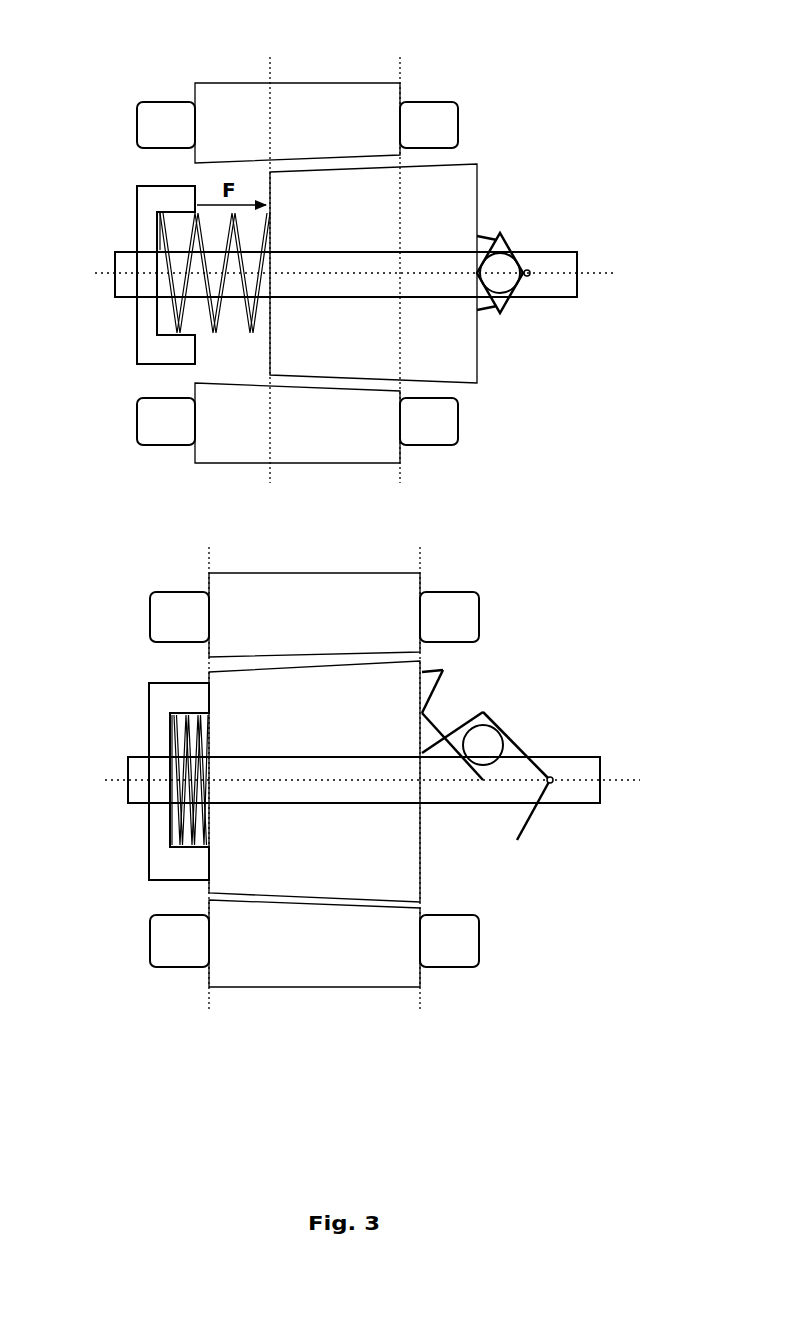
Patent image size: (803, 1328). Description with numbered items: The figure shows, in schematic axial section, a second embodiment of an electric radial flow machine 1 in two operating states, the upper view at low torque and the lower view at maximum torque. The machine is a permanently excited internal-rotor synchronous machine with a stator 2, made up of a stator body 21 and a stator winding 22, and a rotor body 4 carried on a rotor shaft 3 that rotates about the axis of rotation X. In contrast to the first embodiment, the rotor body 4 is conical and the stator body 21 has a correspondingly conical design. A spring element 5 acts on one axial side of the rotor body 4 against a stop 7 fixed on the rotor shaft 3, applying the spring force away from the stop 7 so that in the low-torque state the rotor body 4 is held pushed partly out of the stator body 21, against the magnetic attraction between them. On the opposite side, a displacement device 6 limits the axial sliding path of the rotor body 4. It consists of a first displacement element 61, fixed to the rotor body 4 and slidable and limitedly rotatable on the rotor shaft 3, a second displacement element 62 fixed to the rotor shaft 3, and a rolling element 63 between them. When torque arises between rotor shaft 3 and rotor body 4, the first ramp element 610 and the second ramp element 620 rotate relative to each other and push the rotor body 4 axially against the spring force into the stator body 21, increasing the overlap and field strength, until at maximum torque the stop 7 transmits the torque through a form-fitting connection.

The electric radial flow machine 1 is at (554, 155).
The stator 2 is at (405, 101).
The stator body 21 is at (298, 105).
The stator winding 22 is at (173, 123).
The rotor shaft 3 is at (555, 270).
The rotor body 4 is at (465, 197).
The spring element 5 is at (172, 333).
The displacement device 6 is at (560, 562).
The first displacement element 61 is at (508, 506).
The first ramp element 610 is at (493, 313).
The second displacement element 62 is at (590, 580).
The second ramp element 620 is at (517, 300).
The rolling element 63 is at (497, 277).
The stop 7 is at (147, 207).
The axis of rotation X is at (103, 273).